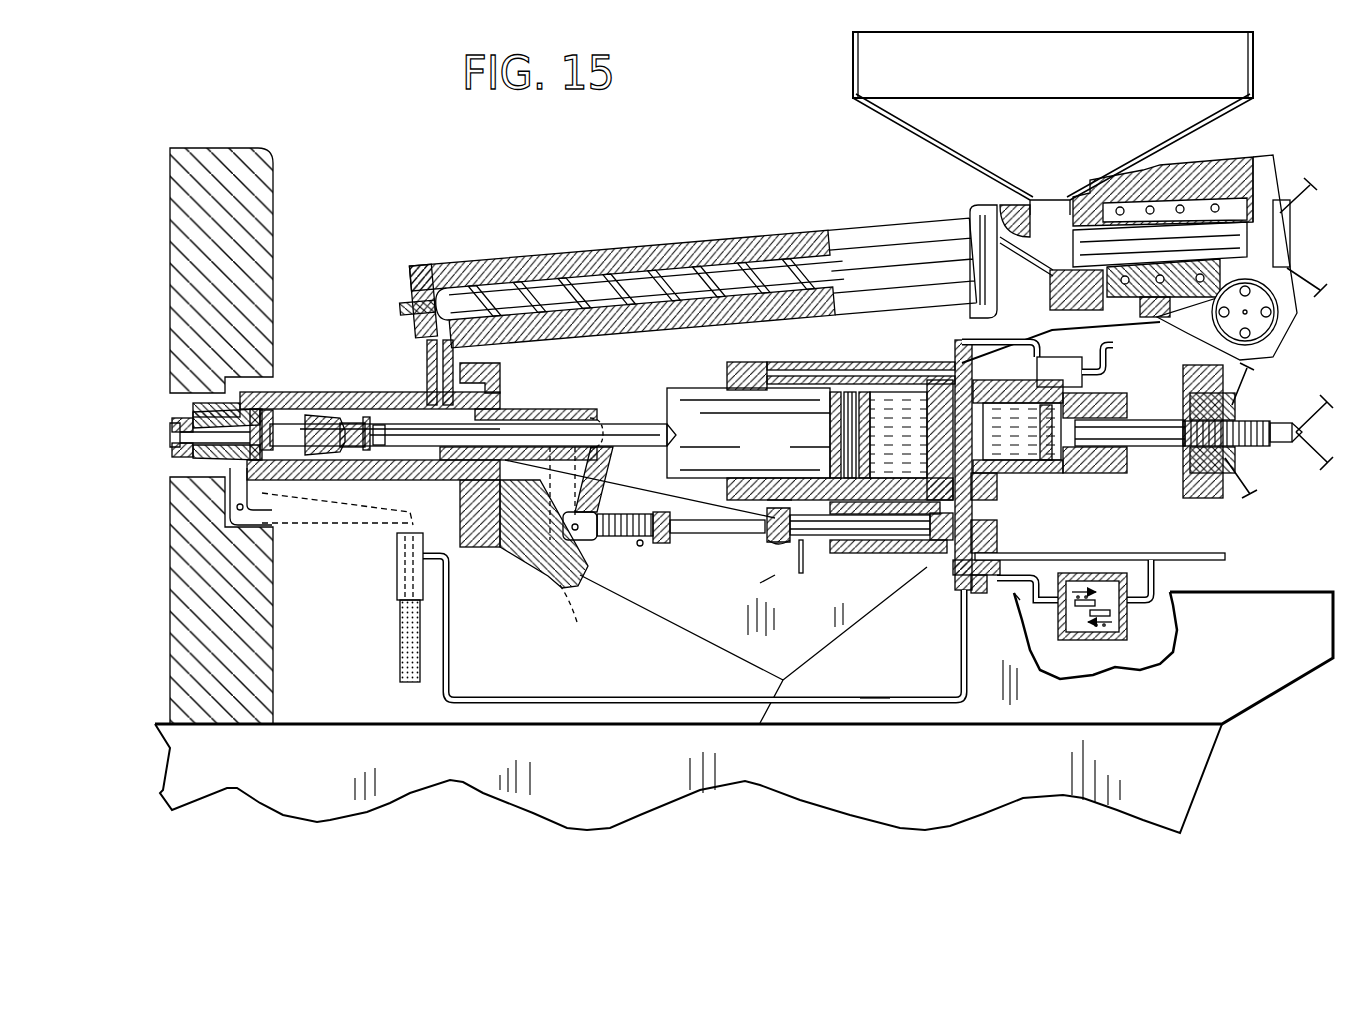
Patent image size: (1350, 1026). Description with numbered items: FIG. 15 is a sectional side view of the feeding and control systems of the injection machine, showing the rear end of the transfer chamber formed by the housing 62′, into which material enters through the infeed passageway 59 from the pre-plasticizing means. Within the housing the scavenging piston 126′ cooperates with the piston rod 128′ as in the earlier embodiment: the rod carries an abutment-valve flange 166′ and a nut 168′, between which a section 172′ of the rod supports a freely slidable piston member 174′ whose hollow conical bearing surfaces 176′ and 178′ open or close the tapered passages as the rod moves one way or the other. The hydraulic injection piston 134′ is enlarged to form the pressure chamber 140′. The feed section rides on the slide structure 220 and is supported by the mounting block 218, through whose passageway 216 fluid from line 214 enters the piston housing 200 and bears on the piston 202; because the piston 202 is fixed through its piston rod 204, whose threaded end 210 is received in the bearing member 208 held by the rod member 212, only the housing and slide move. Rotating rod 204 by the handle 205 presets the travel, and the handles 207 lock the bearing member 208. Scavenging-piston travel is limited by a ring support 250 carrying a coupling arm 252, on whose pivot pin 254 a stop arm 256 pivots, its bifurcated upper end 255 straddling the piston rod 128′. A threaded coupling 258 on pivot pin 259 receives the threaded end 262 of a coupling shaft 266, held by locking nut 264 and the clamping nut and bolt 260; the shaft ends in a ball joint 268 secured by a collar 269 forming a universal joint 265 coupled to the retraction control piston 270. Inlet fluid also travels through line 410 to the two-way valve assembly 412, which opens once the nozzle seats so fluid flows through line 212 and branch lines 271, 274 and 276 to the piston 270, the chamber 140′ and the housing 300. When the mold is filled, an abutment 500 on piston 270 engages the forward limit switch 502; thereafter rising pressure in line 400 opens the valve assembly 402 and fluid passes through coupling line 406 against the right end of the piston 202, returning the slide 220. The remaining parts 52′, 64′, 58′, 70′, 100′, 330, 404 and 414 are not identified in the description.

The barrel 52′ is at (762, 245).
The heating cylinder 64′ is at (577, 262).
The flange 58′ is at (428, 357).
The material infeed passageway 59 is at (447, 396).
The housing 62′ is at (288, 392).
The nozzle 70′ is at (172, 437).
The lever 100′ is at (243, 496).
The scavenging piston 126′ is at (557, 408).
The piston rod 128′ is at (604, 422).
The injection piston 134′ is at (550, 433).
The chamber 140′ is at (850, 398).
The abutment-valve flange 166′ is at (368, 416).
The nut 168′ is at (318, 404).
The section of piston rod 172′ is at (350, 445).
The piston member 174′ is at (342, 420).
The bearing surface 176′ is at (380, 480).
The bearing surface 178′ is at (328, 467).
The piston housing 200 is at (1068, 472).
The piston 202 is at (1110, 393).
The piston rod 204 is at (1155, 447).
The handle 205 is at (1182, 488).
The handles 207 is at (1252, 370).
The bearing member 208 is at (1236, 396).
The threaded end 210 is at (1243, 437).
The rod member 212 is at (1022, 605).
The line 214 is at (1090, 553).
The passageway 216 is at (998, 524).
The mounting block 218 is at (980, 595).
The slide structure 220 is at (798, 648).
The ring support 250 is at (473, 545).
The coupling arm 252 is at (527, 553).
The pivot pin 254 is at (584, 546).
The bifurcated upper end 255 is at (620, 455).
The stop arm 256 is at (600, 472).
The threaded coupling 258 is at (593, 545).
The pivot pin 259 is at (567, 527).
The locking nut and bolt 260 is at (641, 547).
The threaded end 262 is at (645, 513).
The locking nut 264 is at (662, 543).
The universal joint 265 is at (853, 540).
The coupling shaft 266 is at (735, 538).
The ball joint 268 is at (783, 556).
The collar 269 is at (778, 505).
The retraction control piston 270 is at (913, 554).
The branch line 271 is at (962, 575).
The branch line 274 is at (998, 502).
The branch line 276 is at (948, 431).
The housing 300 is at (390, 608).
The pipe 330 is at (448, 590).
The line 400 is at (884, 364).
The valve assembly 402 is at (1059, 372).
The pipe 404 is at (1107, 360).
The coupling line 406 is at (1015, 360).
The line 410 is at (1155, 580).
The valve assembly 412 is at (1093, 640).
The pipe 414 is at (873, 697).
The abutment 500 is at (790, 520).
The forward limit switch 502 is at (760, 583).